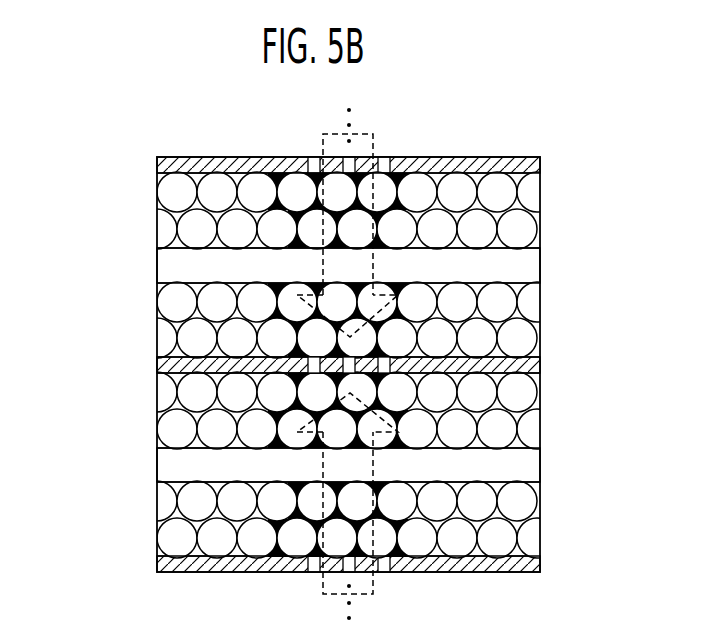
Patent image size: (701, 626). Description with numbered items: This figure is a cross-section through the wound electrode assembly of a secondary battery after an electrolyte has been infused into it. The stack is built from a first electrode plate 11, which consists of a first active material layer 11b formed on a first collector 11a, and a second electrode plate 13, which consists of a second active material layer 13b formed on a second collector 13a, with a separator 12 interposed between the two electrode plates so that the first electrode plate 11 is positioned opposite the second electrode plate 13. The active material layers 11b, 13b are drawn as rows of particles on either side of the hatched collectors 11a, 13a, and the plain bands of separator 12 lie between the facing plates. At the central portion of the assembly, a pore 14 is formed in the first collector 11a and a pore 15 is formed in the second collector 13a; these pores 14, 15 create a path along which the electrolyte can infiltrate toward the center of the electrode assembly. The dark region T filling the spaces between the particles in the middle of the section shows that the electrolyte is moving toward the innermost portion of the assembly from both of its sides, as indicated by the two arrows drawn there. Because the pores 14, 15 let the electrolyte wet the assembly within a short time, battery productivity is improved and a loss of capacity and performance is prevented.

The first electrode plate 11 is at (303, 365).
The first collector 11a is at (158, 366).
The first active material layer 11b is at (182, 332).
The separator 12 is at (165, 266).
The second electrode plate 13 is at (300, 357).
The second collector 13a is at (157, 166).
The second active material layer 13b is at (172, 192).
The pore 14 is at (433, 362).
The pore 15 is at (405, 160).
The dark region T is at (268, 158).